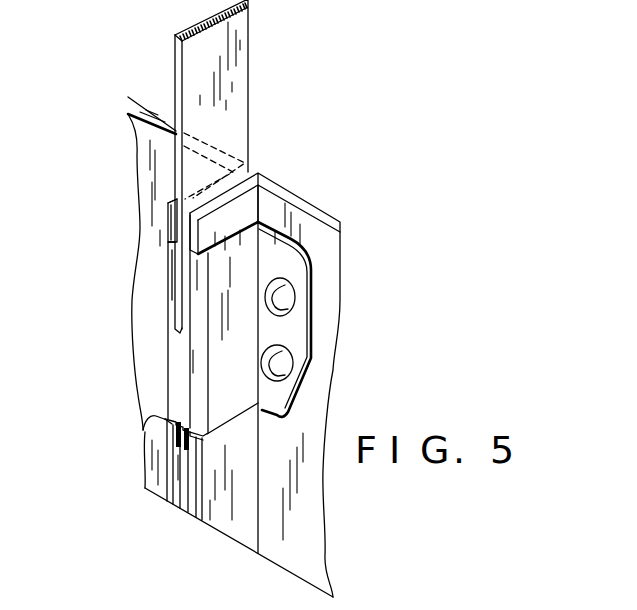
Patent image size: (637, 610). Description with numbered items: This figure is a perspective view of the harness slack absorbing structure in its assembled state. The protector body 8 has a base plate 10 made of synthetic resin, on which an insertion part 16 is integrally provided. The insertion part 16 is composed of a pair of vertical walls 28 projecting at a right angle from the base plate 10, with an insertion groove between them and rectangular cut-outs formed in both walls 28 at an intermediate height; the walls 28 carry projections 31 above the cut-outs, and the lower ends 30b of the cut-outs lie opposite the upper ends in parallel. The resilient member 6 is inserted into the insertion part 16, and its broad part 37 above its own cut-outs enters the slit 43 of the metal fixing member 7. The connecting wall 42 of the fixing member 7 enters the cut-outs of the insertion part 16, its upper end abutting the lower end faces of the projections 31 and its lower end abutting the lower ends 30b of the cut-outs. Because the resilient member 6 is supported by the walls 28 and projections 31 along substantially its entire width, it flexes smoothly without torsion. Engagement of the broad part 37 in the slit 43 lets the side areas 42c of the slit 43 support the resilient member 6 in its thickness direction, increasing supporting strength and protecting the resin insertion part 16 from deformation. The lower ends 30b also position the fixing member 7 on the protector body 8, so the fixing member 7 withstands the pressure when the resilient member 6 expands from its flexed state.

The resilient member 6 is at (175, 62).
The broad part 37 is at (200, 107).
The insertion part 16 is at (168, 203).
The side areas of the slit 42c is at (170, 280).
The fixing member 7 is at (167, 347).
The connecting wall 42 is at (185, 380).
The lower ends of the cut-outs 30b is at (142, 432).
The vertical walls 28 is at (263, 181).
The base plate 10 is at (313, 238).
The protector body 8 is at (352, 257).
The projections 31 is at (207, 230).
The slit 43 is at (192, 310).